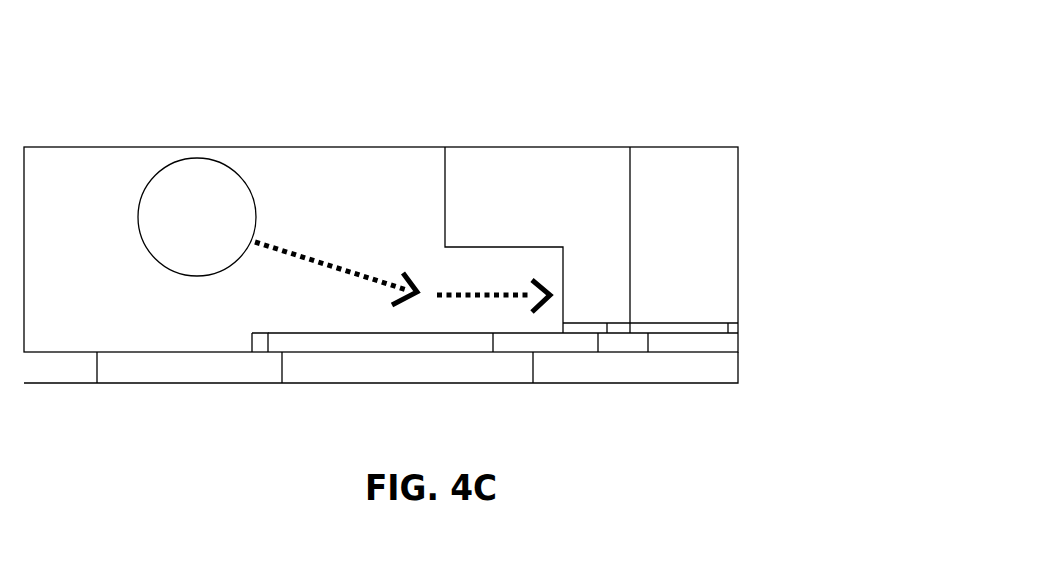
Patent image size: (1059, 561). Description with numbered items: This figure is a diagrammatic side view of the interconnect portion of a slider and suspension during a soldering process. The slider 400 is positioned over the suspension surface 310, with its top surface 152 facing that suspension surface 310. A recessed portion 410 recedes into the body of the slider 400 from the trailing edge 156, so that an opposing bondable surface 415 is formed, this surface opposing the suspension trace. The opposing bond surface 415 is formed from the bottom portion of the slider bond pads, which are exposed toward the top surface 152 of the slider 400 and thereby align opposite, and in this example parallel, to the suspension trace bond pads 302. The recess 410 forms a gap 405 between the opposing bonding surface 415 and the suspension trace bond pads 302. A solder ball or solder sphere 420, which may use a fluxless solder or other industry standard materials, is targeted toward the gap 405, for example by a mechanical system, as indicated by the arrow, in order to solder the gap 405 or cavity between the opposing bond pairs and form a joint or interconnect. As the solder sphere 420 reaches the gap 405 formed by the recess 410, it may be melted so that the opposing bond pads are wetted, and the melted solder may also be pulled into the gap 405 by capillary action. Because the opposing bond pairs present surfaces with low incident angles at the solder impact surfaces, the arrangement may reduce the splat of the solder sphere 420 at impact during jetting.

The slider 400 is at (659, 41).
The solder sphere 420 is at (162, 168).
The trailing edge 156 is at (428, 165).
The recessed portion 410 is at (577, 218).
The opposing bondable surface 415 is at (478, 266).
The top surface 152 is at (766, 316).
The suspension trace bond pads 302 is at (257, 342).
The gap 405 is at (484, 320).
The suspension surface 310 is at (738, 363).